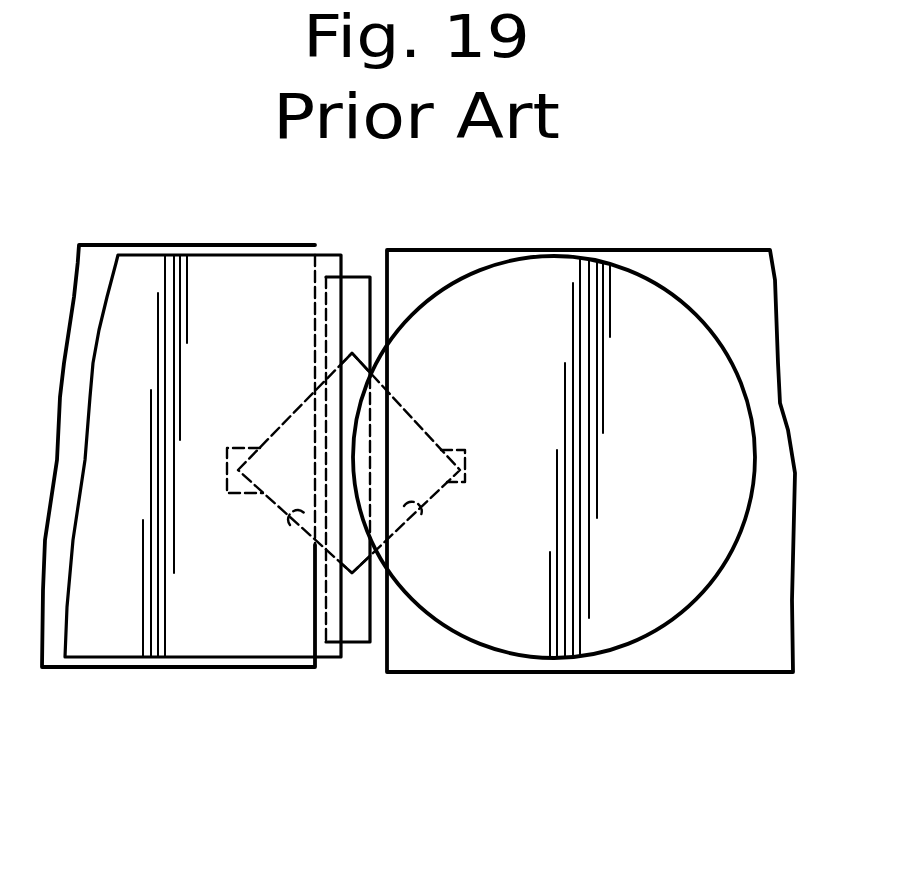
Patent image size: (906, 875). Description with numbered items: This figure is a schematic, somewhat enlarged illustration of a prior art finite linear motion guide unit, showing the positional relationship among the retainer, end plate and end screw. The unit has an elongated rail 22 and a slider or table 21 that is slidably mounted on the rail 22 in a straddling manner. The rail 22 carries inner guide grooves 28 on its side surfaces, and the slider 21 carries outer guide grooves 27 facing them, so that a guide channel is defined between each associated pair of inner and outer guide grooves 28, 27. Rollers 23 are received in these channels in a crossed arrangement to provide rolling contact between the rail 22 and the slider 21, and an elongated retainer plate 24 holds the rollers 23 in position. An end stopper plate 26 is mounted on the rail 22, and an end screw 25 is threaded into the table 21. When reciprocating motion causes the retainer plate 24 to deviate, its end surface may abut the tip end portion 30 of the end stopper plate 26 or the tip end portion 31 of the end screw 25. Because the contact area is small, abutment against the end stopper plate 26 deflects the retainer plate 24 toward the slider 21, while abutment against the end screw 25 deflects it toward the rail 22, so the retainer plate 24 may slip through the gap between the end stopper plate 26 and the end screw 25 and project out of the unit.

The slider 21 is at (733, 640).
The rail 22 is at (63, 657).
The rollers 23 is at (273, 497).
The retainer plate 24 is at (353, 625).
The end screw 25 is at (523, 632).
The end stopper plate 26 is at (305, 632).
The outer guide grooves 27 is at (410, 520).
The inner guide grooves 28 is at (303, 522).
The tip end portion of end stopper plate 30 is at (346, 303).
The tip end portion of end screw 31 is at (373, 397).